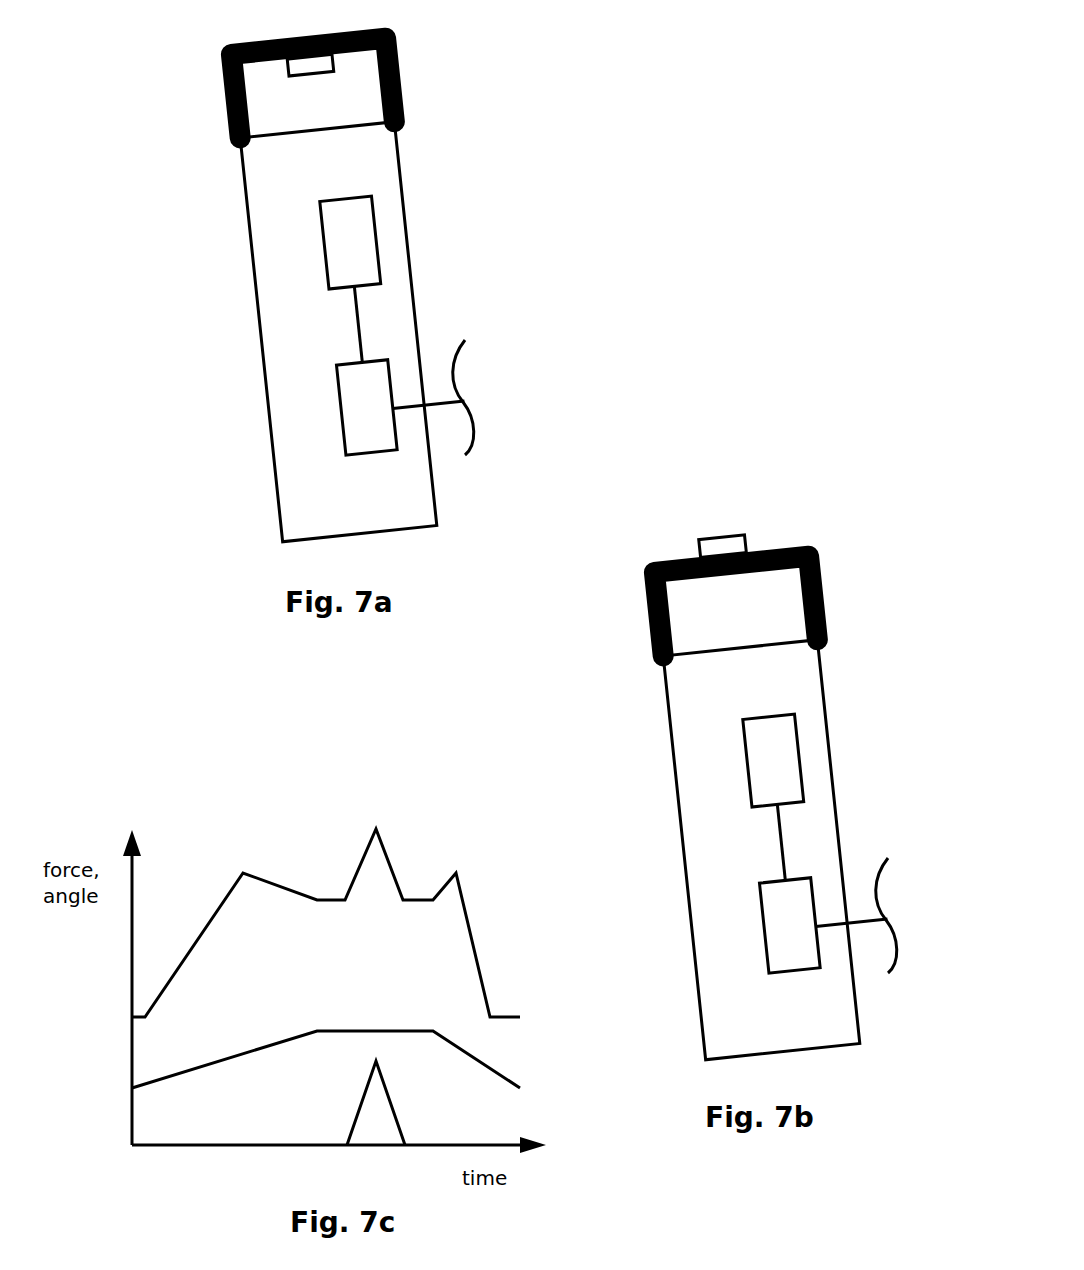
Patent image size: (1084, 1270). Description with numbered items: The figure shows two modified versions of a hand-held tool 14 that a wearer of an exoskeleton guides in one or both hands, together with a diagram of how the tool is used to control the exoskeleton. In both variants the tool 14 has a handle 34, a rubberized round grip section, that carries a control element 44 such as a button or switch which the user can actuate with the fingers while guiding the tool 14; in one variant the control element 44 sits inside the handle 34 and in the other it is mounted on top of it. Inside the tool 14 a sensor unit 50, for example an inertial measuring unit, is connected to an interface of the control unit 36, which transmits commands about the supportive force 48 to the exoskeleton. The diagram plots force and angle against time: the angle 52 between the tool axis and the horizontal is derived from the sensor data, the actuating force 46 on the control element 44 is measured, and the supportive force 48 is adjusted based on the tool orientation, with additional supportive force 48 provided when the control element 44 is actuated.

In FIG. 7A, the tool 14 is at (495, 312).
In FIG. 7B, the tool 14 is at (868, 800).
In FIG. 7A, the handle 34 is at (396, 90).
In FIG. 7B, the handle 34 is at (817, 620).
In FIG. 7A, the control element 44 is at (290, 75).
In FIG. 7B, the control element 44 is at (726, 542).
In FIG. 7A, the sensor unit 50 is at (321, 223).
In FIG. 7B, the sensor unit 50 is at (744, 741).
In FIG. 7A, the control unit 36 is at (395, 449).
In FIG. 7B, the control unit 36 is at (817, 967).
In FIG. 7C, the supportive force 48 is at (345, 902).
In FIG. 7C, the angle 52 is at (355, 1031).
In FIG. 7C, the actuating force 46 is at (360, 1103).